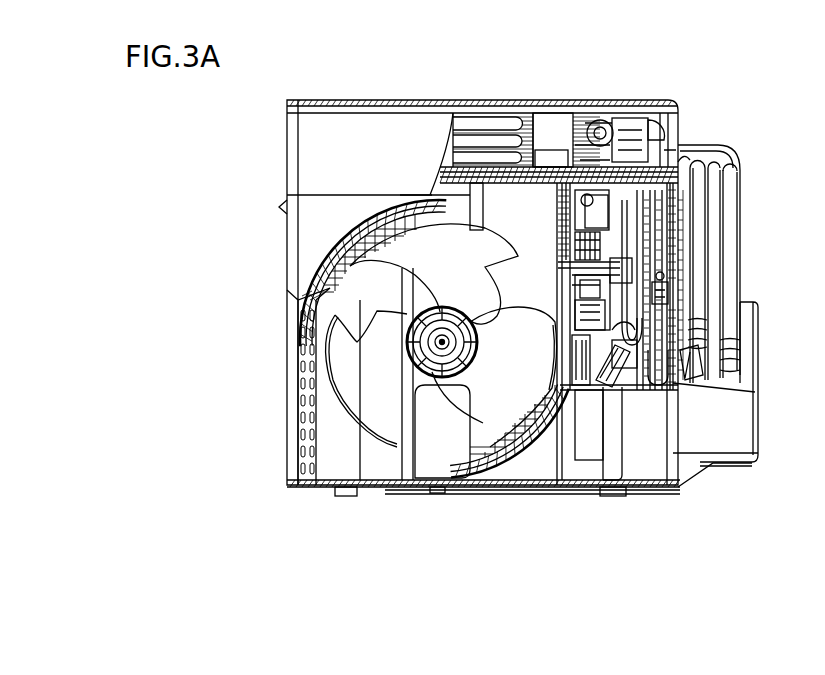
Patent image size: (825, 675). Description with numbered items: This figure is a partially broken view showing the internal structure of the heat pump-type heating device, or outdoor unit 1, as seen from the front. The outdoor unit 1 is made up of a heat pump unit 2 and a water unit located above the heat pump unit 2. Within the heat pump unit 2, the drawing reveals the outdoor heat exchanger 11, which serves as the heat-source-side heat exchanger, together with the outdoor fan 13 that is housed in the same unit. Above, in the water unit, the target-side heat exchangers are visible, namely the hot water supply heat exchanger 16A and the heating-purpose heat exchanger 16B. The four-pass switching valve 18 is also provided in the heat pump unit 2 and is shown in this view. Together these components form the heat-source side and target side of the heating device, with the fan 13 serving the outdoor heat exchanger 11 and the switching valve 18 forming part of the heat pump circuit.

The heat pump-type heating device (outdoor unit) 1 is at (678, 72).
The heat pump unit 2 is at (258, 303).
The outdoor heat exchanger 11 is at (330, 437).
The outdoor fan 13 is at (345, 368).
The hot water supply heat exchanger 16A is at (498, 160).
The heating-purpose heat exchanger 16B is at (492, 145).
The four-pass switching valve 18 is at (670, 295).